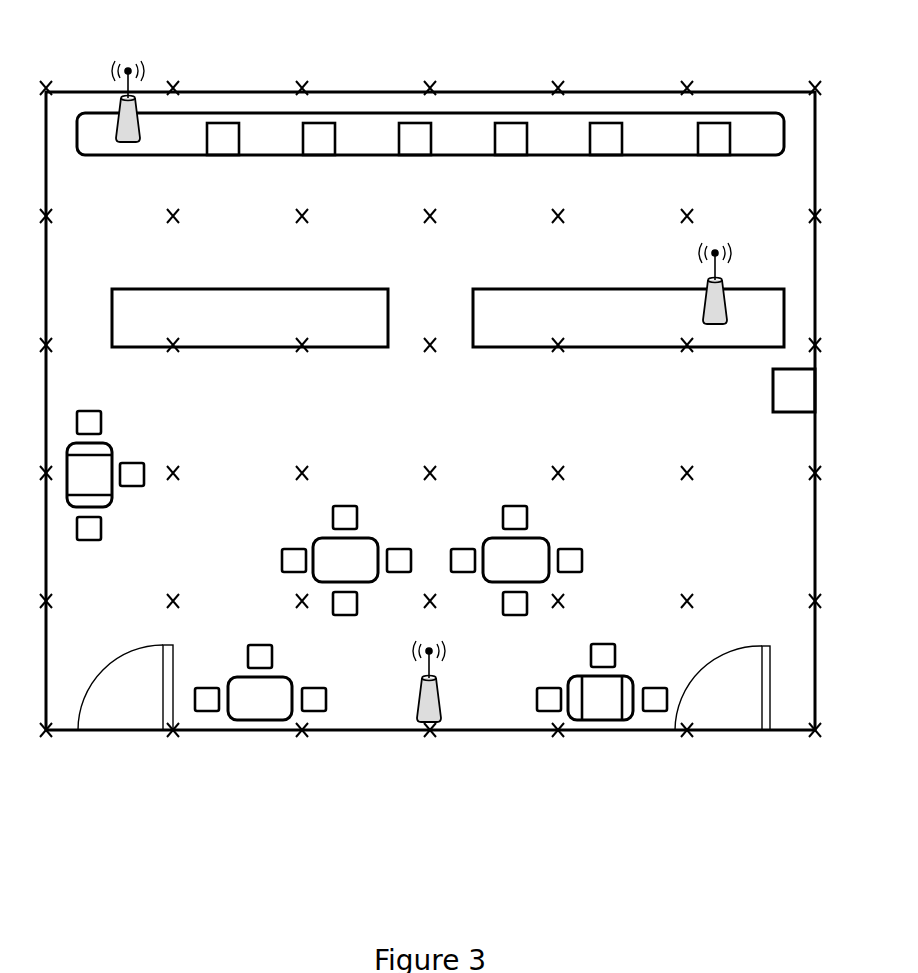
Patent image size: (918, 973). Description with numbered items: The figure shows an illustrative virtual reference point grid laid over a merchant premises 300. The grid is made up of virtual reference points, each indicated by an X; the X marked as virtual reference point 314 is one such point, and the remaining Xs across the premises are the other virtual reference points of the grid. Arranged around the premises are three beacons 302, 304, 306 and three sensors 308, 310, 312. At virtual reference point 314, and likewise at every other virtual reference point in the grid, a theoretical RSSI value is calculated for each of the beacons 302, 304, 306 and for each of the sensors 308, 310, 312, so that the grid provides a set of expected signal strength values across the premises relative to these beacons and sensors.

The indoor environment 300 is at (88, 62).
The beacon 302 is at (136, 100).
The beacon 304 is at (723, 281).
The beacon 306 is at (437, 692).
The sensor 308 is at (803, 413).
The sensor 310 is at (100, 468).
The sensor 312 is at (613, 688).
The virtual reference point 314 is at (177, 207).